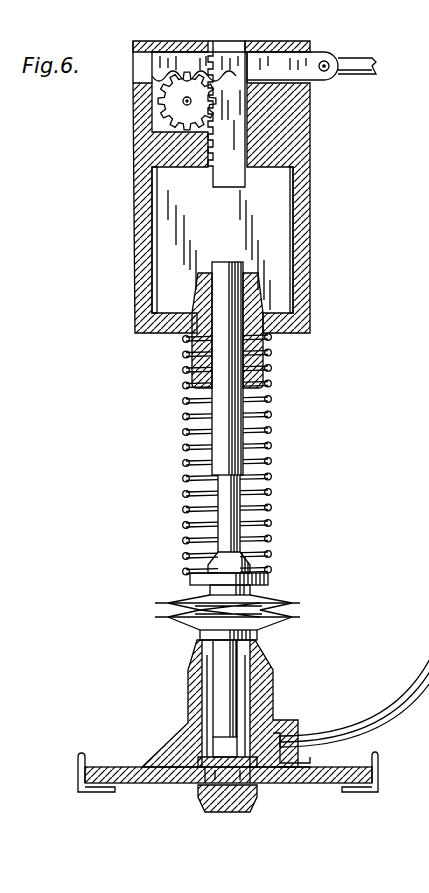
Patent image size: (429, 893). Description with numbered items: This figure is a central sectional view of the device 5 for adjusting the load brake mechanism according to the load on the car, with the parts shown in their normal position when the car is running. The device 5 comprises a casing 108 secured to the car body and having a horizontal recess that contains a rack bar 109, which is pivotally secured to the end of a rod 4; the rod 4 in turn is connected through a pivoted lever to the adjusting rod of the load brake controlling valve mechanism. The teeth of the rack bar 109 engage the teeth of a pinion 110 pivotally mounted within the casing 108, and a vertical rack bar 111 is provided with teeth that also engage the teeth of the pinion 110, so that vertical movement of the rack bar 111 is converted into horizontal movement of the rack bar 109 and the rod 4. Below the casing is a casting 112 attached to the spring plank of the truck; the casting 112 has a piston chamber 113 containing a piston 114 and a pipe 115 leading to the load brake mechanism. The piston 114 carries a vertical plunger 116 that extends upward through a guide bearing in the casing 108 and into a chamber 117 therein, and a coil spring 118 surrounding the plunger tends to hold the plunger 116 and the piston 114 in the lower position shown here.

The rod 4 is at (350, 75).
The device for adjusting the load brake mechanism 5 is at (310, 157).
The casing 108 is at (142, 153).
The rack bar 109 is at (287, 60).
The pinion 110 is at (177, 107).
The vertical rack bar 111 is at (235, 172).
The casting 112 is at (142, 767).
The piston chamber 113 is at (267, 789).
The piston 114 is at (258, 755).
The pipe 115 is at (390, 708).
The vertical plunger 116 is at (228, 377).
The chamber 117 is at (285, 230).
The coil spring 118 is at (268, 455).